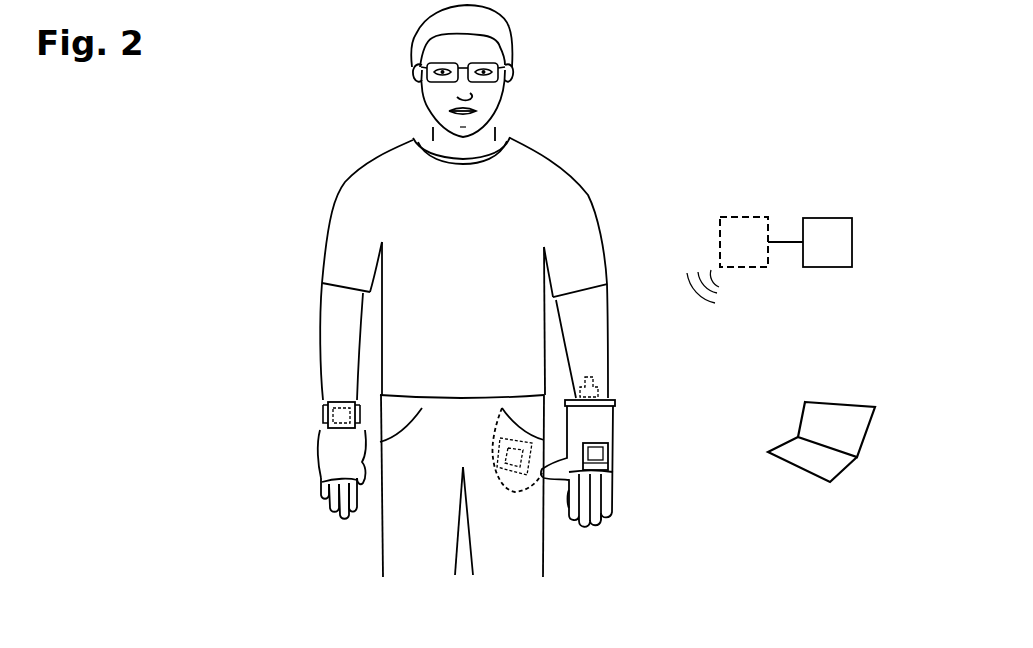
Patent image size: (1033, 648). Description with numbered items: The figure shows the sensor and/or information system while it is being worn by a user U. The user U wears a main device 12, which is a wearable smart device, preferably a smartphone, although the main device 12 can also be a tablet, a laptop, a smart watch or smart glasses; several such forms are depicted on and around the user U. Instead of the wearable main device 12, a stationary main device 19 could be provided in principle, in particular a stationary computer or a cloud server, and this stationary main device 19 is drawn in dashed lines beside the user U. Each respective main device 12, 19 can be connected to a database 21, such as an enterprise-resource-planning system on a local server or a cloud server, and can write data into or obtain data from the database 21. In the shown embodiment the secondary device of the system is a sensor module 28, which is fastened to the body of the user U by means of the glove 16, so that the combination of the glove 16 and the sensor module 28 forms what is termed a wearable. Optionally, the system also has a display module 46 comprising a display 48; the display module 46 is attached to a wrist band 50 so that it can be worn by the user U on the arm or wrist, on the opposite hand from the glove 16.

The main device 12 is at (490, 55).
The glove 16 is at (605, 437).
The stationary main device 19 is at (745, 217).
The database 21 is at (827, 217).
The sensor module 28 is at (613, 463).
The display module 46 is at (343, 402).
The display 48 is at (342, 418).
The wrist band 50 is at (325, 417).
The user U is at (371, 164).